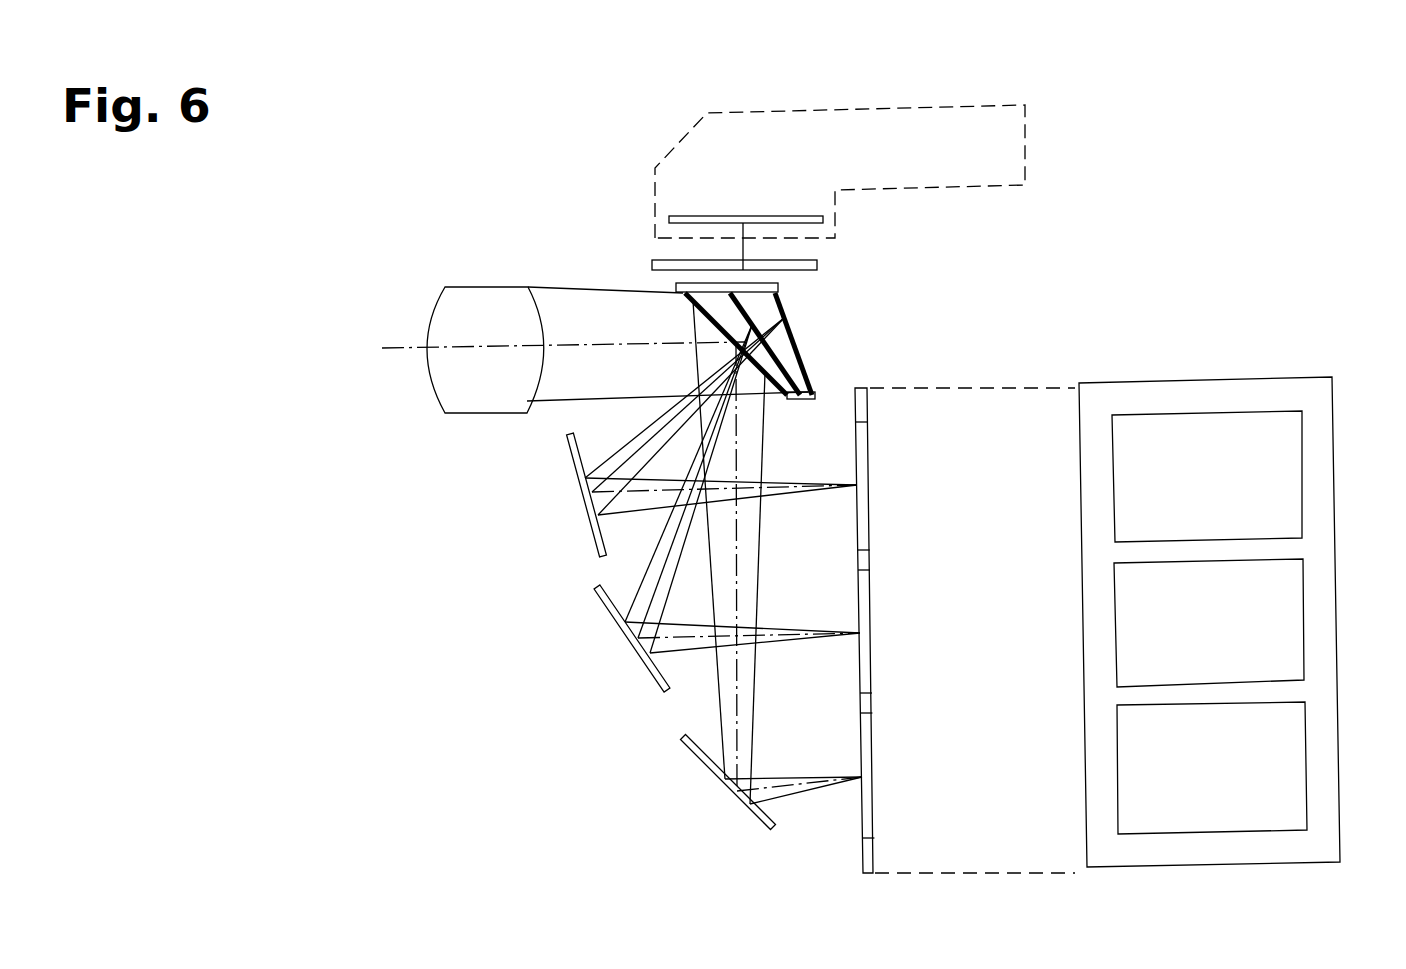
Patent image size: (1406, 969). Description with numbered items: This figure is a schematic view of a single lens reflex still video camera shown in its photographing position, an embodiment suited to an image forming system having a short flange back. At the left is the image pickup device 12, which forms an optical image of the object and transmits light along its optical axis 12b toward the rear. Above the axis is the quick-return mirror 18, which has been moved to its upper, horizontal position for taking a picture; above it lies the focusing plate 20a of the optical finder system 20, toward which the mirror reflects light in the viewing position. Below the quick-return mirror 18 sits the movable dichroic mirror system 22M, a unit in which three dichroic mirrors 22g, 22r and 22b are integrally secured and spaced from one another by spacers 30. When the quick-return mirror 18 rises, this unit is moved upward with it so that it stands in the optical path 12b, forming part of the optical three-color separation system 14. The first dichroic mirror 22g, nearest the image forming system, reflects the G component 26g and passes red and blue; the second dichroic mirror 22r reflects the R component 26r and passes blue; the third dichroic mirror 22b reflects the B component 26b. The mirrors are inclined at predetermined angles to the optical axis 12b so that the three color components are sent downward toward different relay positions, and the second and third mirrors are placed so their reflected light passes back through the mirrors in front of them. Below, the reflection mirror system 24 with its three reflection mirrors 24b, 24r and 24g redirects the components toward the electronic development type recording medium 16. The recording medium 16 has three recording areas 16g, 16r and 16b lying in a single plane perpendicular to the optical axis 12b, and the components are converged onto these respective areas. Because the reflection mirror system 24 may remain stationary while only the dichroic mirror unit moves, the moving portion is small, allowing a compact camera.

The image pickup device 12 is at (455, 240).
The optical axis 12b is at (408, 348).
The optical three-color separation system 14 is at (825, 408).
The electronic development type recording medium 16 is at (862, 390).
The recording area for blue component 16b is at (1303, 455).
The recording area for red component 16r is at (1305, 625).
The recording area for green component 16g is at (1306, 770).
The quick-return mirror 18 is at (650, 268).
The optical finder system 20 is at (818, 110).
The focusing plate 20a is at (710, 216).
The movable dichroic mirror system 22M is at (1003, 329).
The first dichroic mirror 22g is at (710, 318).
The second dichroic mirror 22r is at (760, 337).
The third dichroic mirror 22b is at (801, 365).
The reflection mirror system 24 is at (503, 560).
The reflection mirror for blue component 24b is at (590, 510).
The reflection mirror for red component 24r is at (617, 618).
The reflection mirror for green component 24g is at (683, 740).
The B component 26b is at (797, 490).
The R component 26r is at (790, 632).
The G component 26g is at (787, 778).
The spacers 30 is at (778, 287).